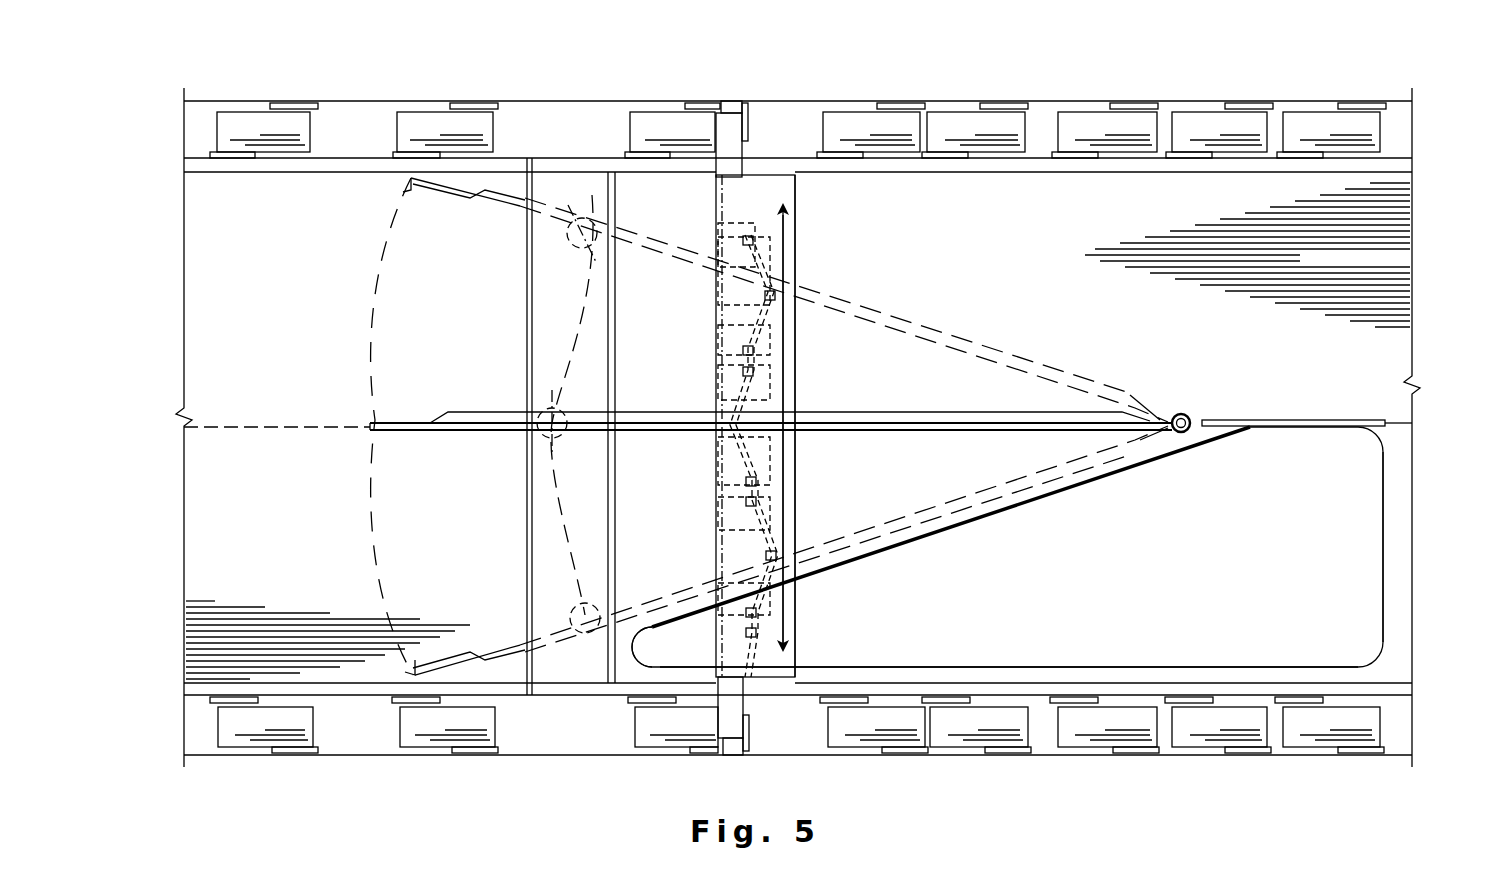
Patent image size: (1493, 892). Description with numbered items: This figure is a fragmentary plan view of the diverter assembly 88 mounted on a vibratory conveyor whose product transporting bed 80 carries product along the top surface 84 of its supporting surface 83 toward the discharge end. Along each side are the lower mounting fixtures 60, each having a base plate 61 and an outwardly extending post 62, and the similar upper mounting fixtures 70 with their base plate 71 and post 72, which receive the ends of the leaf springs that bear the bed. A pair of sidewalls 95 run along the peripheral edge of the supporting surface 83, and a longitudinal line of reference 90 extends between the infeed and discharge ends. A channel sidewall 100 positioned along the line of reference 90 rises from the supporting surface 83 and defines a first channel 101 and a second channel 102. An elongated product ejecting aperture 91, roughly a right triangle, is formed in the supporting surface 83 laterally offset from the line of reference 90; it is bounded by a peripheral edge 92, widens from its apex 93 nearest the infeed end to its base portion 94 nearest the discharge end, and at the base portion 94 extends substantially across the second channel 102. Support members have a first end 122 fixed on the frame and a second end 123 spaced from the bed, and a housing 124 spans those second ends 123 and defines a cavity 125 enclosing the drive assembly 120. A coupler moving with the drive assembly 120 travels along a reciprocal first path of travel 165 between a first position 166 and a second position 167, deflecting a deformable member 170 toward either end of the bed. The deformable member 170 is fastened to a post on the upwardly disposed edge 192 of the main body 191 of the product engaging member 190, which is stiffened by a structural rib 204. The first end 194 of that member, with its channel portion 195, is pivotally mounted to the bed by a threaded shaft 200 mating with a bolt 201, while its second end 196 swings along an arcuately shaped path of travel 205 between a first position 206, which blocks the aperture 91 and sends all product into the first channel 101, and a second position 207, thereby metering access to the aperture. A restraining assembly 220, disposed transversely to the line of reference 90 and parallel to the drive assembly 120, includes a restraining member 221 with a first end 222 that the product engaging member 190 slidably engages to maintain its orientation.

The lower mounting fixtures 60 is at (905, 100).
The base plate 61 is at (1112, 100).
The post 62 is at (995, 102).
The upper mounting fixtures 70 is at (812, 150).
The base plate 71 is at (840, 160).
The post 72 is at (848, 152).
The product transporting bed 80 is at (1342, 271).
The supporting surface 83 is at (1112, 313).
The top surface 84 is at (278, 283).
The diverter assembly 88 is at (945, 265).
The longitudinal line of reference 90 is at (250, 432).
The product ejecting aperture 91 is at (1358, 502).
The peripheral edge 92 is at (950, 527).
The apex 93 is at (640, 650).
The base portion 94 is at (1380, 552).
The sidewalls 95 is at (1040, 160).
The channel sidewall 100 is at (1308, 418).
The first channel 101 is at (880, 276).
The second channel 102 is at (912, 478).
The drive assembly 120 is at (823, 373).
The first end 122 is at (737, 100).
The second end 123 is at (740, 156).
The housing 124 is at (796, 230).
The cavity 125 is at (800, 630).
The reciprocal first path of travel 165 is at (780, 446).
The first position 166 is at (790, 596).
The second position 167 is at (778, 220).
The deformable member 170 is at (762, 336).
The product engaging member 190 is at (692, 433).
The main body 191 is at (932, 412).
The upwardly disposed edge 192 is at (490, 433).
The first end 194 is at (1145, 430).
The channel portion 195 is at (1180, 413).
The second end 196 is at (403, 420).
The threaded shaft 200 is at (1192, 417).
The bolt 201 is at (1192, 432).
The structural rib 204 is at (805, 420).
The arcuately shaped path of travel 205 is at (372, 374).
The first position 206 is at (405, 670).
The second position 207 is at (403, 190).
The restraining assembly 220 is at (527, 530).
The restraining member 221 is at (548, 298).
The first end 222 is at (570, 172).